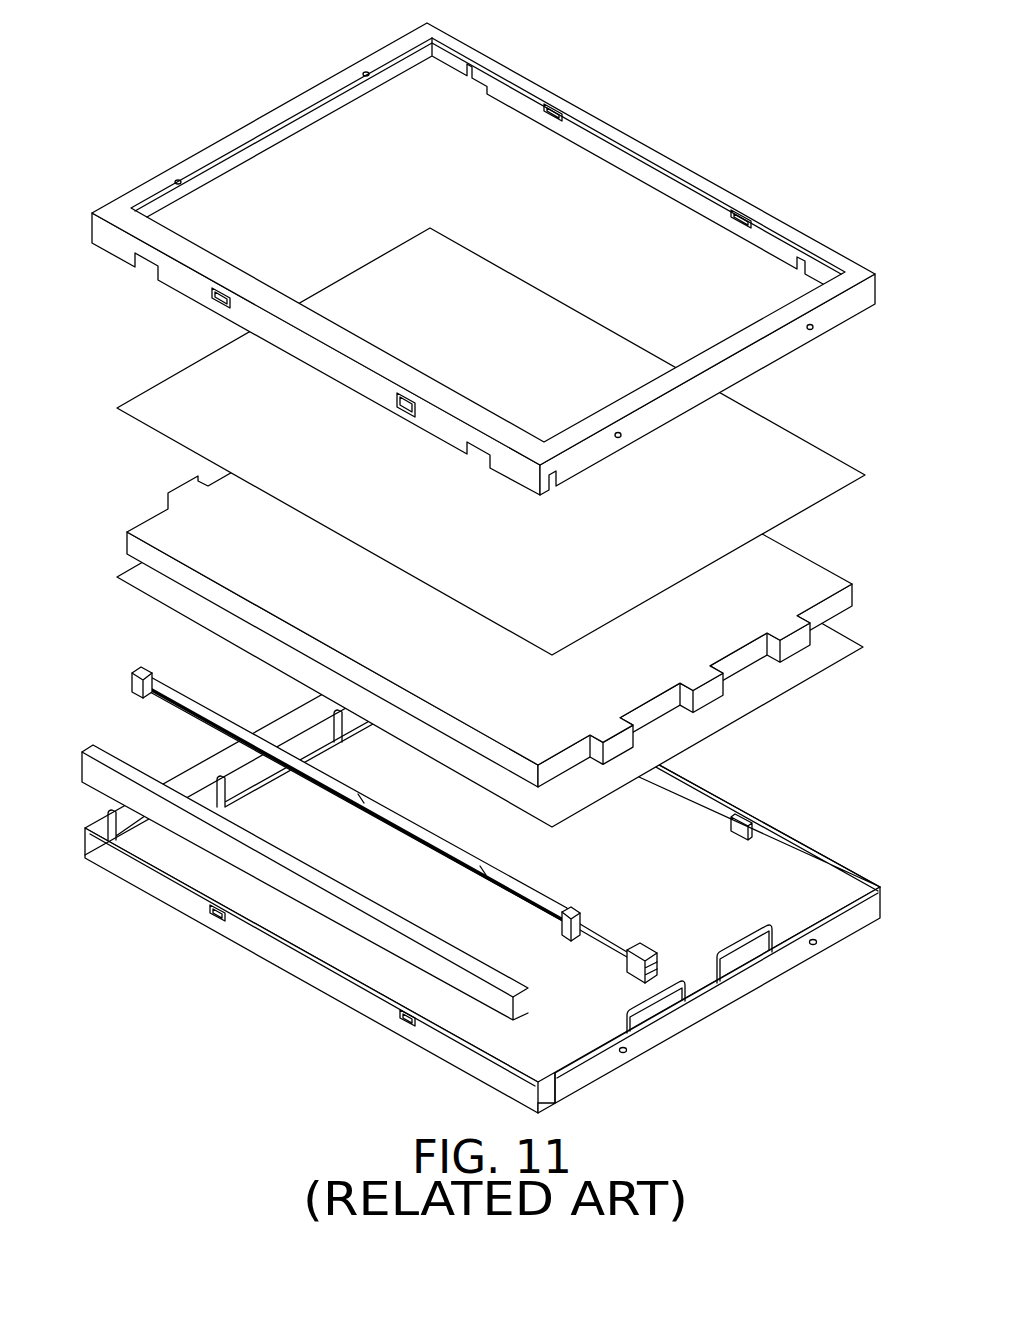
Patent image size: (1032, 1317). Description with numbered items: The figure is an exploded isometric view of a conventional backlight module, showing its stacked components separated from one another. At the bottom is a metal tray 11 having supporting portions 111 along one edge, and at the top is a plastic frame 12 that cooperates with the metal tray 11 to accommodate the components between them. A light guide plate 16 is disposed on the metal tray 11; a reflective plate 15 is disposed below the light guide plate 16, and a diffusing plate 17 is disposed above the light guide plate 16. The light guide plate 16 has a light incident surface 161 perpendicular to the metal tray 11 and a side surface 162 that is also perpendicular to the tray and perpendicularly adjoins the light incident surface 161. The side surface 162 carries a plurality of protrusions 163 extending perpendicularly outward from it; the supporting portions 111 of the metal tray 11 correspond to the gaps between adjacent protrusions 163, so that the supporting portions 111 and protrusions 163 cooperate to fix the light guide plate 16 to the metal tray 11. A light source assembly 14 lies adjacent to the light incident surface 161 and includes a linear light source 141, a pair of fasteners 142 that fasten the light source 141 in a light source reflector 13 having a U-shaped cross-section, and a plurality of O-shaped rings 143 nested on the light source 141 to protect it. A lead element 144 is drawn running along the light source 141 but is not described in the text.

The metal tray 11 is at (482, 874).
The supporting portions 111 is at (660, 1002).
The plastic frame 12 is at (648, 153).
The light source reflector 13 is at (103, 773).
The light source assembly 14 is at (360, 805).
The linear light source 141 is at (163, 693).
The fasteners 142 is at (356, 789).
The O-shaped rings 143 is at (220, 718).
The lead wire 144 is at (167, 703).
The reflective plate 15 is at (797, 670).
The light guide plate 16 is at (451, 570).
The light incident surface 161 is at (133, 548).
The side surface 162 is at (662, 713).
The protrusions 163 is at (710, 693).
The diffusing plate 17 is at (798, 500).